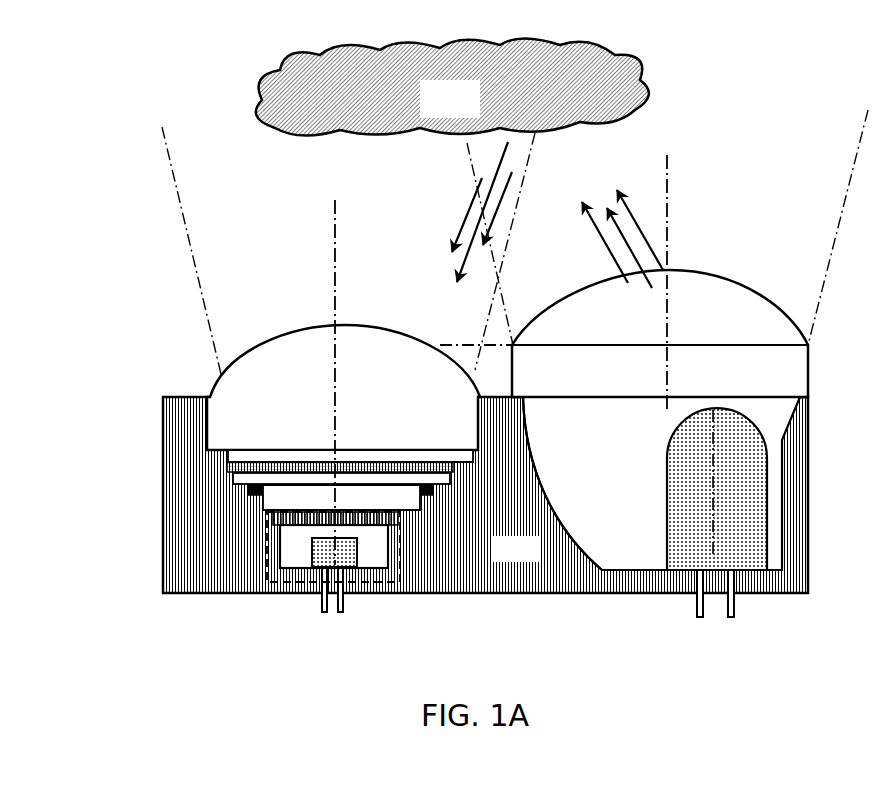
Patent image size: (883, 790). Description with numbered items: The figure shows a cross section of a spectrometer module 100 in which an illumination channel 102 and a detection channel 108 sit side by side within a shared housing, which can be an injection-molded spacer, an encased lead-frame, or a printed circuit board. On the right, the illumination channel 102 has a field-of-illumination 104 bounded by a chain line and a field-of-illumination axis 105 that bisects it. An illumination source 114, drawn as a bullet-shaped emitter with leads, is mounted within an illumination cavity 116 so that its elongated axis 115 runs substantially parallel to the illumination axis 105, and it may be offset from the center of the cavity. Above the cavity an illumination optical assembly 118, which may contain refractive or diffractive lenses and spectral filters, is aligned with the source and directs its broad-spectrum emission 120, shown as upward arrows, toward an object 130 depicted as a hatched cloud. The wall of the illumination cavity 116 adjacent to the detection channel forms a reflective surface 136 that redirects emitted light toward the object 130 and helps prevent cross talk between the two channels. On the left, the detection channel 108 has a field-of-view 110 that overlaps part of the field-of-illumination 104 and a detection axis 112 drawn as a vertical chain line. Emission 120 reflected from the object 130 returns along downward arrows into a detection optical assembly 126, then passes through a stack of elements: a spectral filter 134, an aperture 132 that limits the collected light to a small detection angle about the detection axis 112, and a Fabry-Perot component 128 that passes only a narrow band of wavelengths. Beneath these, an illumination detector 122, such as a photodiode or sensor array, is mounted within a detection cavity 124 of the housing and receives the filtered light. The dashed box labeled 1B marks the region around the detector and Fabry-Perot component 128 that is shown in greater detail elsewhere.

The spectrometer module 100 is at (446, 446).
The illumination channel 102 is at (660, 294).
The field-of-illumination 104 is at (852, 165).
The field-of-illumination axis 105 is at (668, 168).
The detection channel 108 is at (306, 452).
The field-of-view 110 is at (172, 157).
The detection axis 112 is at (338, 222).
The illumination source 114 is at (743, 562).
The elongated axis 115 is at (712, 480).
The illumination cavity 116 is at (661, 483).
The illumination optical assembly 118 is at (660, 333).
The emission 120 is at (541, 215).
The illumination detector 122 is at (312, 545).
The detection cavity 124 is at (447, 514).
The detection optical assembly 126 is at (343, 387).
The Fabry-Perot component 128 is at (273, 520).
The object 130 is at (452, 87).
The aperture 132 is at (250, 492).
The spectral filter 134 is at (228, 472).
The reflective surface 136 is at (642, 566).
The detail region of FIG. 1B is at (400, 568).